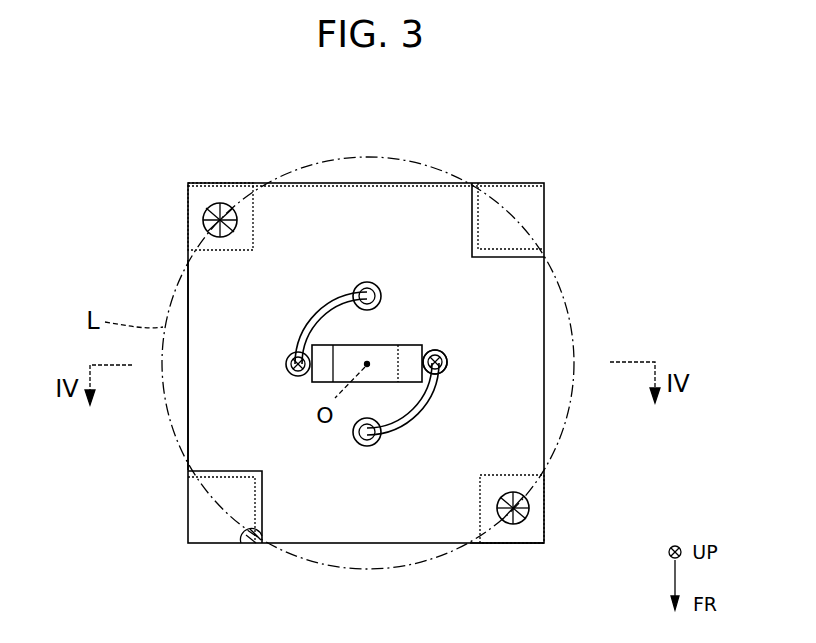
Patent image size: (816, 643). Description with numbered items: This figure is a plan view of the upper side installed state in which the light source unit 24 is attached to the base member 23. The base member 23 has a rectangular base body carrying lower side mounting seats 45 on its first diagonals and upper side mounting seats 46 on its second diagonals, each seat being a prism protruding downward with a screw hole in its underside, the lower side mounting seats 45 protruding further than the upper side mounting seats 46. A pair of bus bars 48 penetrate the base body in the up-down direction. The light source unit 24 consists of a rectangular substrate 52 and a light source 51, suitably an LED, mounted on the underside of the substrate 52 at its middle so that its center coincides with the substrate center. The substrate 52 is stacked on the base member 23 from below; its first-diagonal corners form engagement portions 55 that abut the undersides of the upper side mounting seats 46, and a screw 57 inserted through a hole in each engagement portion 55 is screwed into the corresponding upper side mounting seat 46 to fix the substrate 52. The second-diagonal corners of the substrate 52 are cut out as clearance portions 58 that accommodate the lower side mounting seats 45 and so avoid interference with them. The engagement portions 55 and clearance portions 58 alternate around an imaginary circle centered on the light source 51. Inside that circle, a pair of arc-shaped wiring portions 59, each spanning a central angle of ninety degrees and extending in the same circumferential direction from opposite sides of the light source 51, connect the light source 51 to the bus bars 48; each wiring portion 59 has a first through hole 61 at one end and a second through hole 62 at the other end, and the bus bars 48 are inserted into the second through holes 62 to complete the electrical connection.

The base member 23 is at (533, 176).
The light source unit 24 is at (416, 177).
The lower side mounting seat 45 is at (202, 525).
The upper side mounting seat 46 is at (530, 508).
The bus bar 48 is at (447, 358).
The light source 51 is at (385, 355).
The substrate 52 is at (207, 443).
The engagement portion 55 is at (507, 544).
The screw 57 is at (517, 492).
The clearance portion 58 is at (250, 535).
The wiring portion 59 is at (413, 422).
The first through hole 61 is at (361, 445).
The second through hole 62 is at (437, 350).